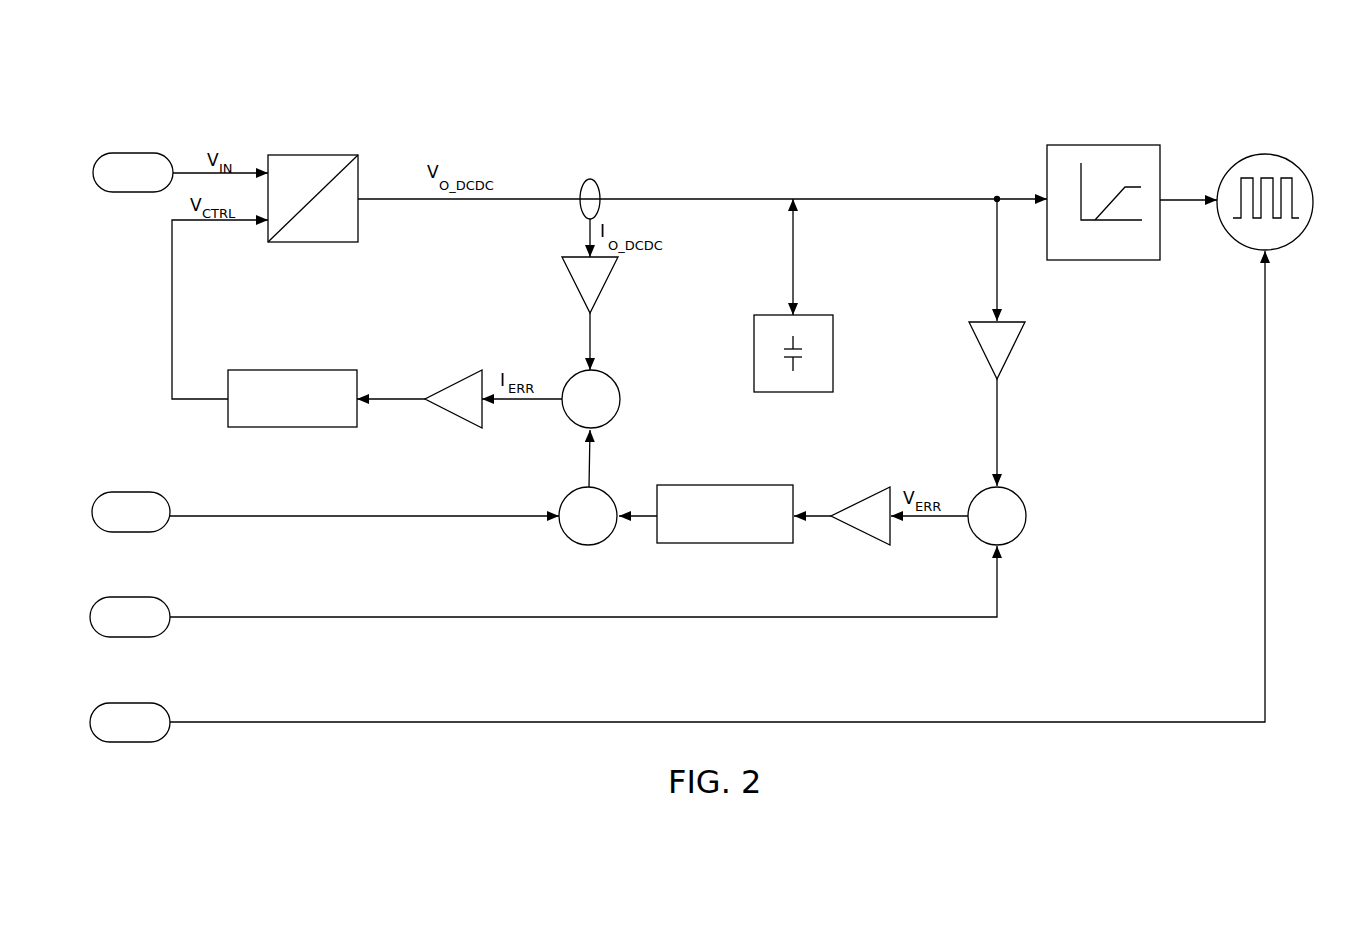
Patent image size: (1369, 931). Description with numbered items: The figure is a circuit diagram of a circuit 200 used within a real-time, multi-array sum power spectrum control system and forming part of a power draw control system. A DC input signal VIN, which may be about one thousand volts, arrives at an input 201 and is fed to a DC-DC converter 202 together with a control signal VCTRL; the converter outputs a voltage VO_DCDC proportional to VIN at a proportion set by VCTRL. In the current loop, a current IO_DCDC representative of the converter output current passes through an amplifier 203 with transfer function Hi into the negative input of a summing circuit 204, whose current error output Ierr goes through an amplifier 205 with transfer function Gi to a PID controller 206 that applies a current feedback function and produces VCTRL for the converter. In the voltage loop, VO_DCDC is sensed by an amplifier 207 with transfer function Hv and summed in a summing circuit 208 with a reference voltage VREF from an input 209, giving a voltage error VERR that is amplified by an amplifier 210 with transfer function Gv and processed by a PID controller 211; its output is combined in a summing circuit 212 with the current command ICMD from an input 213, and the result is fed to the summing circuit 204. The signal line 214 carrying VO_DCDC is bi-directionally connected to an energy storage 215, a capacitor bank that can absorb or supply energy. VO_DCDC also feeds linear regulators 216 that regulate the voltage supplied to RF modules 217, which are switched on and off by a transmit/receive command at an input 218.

The circuit 200 is at (418, 86).
The input 201 is at (133, 152).
The DC-DC converter 202 is at (312, 154).
The amplifier 203 is at (606, 290).
The summing circuit 204 is at (568, 375).
The amplifier 205 is at (454, 379).
The proportional-integral-derivative (PID) controller 206 is at (292, 369).
The amplifier 207 is at (1013, 354).
The summing circuit 208 is at (1018, 538).
The input 209 is at (130, 638).
The amplifier 210 is at (861, 537).
The PID controller 211 is at (723, 545).
The summing circuit 212 is at (570, 538).
The input 213 is at (130, 533).
The signal line 214 is at (892, 198).
The energy storage 215 is at (833, 350).
The linear regulators 216 is at (1102, 144).
The RF modules 217 is at (1296, 166).
The input 218 is at (130, 743).